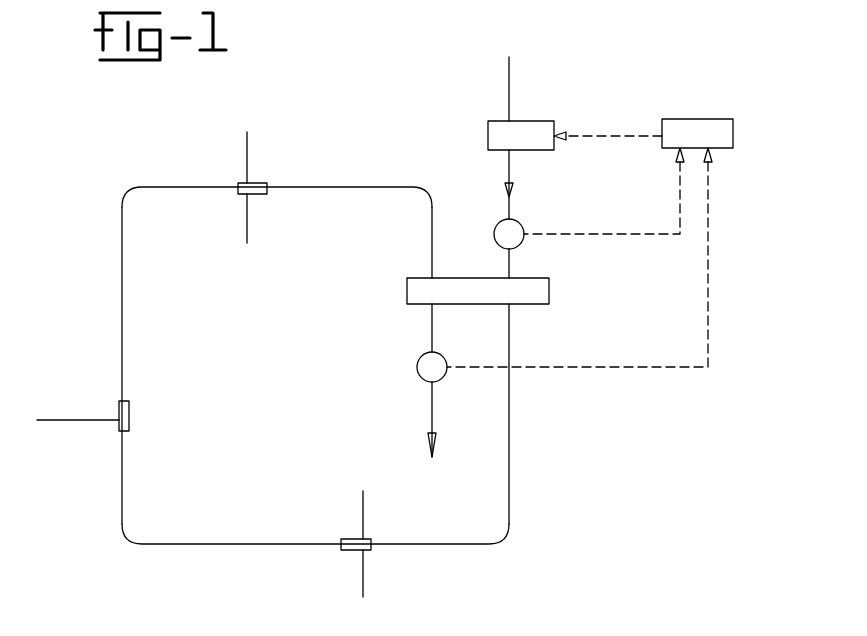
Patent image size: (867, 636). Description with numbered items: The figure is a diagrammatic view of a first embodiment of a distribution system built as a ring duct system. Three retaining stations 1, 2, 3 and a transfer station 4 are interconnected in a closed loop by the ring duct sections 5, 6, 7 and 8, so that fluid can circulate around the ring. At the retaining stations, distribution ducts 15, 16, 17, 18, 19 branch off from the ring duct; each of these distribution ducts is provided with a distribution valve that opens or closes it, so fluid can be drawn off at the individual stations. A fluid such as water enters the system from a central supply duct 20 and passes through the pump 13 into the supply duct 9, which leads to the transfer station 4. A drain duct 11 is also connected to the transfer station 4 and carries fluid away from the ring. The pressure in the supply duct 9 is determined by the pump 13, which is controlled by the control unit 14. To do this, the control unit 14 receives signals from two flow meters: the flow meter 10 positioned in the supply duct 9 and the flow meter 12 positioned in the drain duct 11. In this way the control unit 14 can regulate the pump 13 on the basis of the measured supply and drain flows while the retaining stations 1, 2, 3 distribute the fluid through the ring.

The retaining station 1 is at (349, 550).
The retaining station 2 is at (119, 412).
The retaining station 3 is at (262, 183).
The transfer station 4 is at (549, 297).
The ring duct section 5 is at (372, 187).
The ring duct section 6 is at (130, 205).
The ring duct section 7 is at (137, 544).
The ring duct section 8 is at (510, 527).
The supply duct 9 is at (510, 176).
The flow meter 10 is at (521, 226).
The drain duct 11 is at (430, 438).
The flow meter 12 is at (421, 361).
The pump 13 is at (536, 128).
The control unit 14 is at (703, 128).
The distribution duct 15 is at (365, 584).
The distribution duct 16 is at (365, 500).
The distribution duct 17 is at (46, 420).
The distribution duct 18 is at (247, 142).
The distribution duct 19 is at (247, 235).
The central supply duct 20 is at (509, 72).